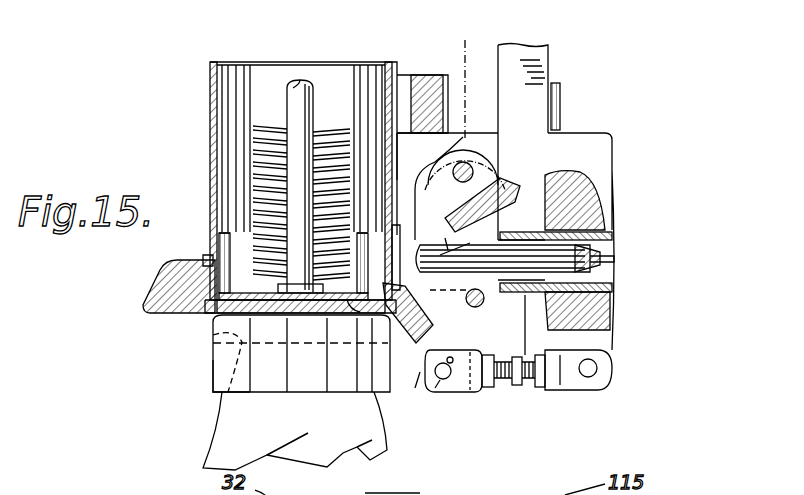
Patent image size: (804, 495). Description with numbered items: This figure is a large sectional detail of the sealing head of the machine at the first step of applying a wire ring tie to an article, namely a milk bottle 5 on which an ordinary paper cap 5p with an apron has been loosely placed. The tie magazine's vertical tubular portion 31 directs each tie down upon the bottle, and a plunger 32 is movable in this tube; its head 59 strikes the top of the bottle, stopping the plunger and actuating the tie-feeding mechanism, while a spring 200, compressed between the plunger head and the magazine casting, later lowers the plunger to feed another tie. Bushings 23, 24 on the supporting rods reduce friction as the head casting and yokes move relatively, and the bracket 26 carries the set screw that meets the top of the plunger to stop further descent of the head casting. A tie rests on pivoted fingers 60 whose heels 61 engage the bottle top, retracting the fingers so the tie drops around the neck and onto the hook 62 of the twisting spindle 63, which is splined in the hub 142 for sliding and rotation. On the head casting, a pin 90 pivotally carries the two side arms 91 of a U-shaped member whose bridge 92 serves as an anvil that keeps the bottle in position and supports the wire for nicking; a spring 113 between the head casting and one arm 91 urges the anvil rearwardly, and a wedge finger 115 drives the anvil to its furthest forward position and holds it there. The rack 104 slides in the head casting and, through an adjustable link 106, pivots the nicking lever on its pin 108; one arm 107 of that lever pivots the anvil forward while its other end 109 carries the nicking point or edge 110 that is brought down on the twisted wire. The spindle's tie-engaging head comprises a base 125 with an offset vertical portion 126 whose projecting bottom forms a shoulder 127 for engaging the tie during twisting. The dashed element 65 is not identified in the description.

The vertical tubular portion 31 is at (212, 158).
The plunger 32 is at (300, 103).
The spring 200 is at (252, 181).
The fingers 60 is at (300, 239).
The bushing 23 is at (147, 300).
The head 59 is at (204, 262).
The milk bottle 5 is at (222, 420).
The paper cap 5p is at (236, 375).
The hidden line 65 is at (222, 336).
The heels 61 is at (358, 312).
The side arms 91 is at (440, 166).
The pin 90 is at (465, 168).
The spring 113 is at (468, 75).
The wedge or finger 115 is at (540, 60).
The bushing 24 is at (562, 92).
The bracket 26 is at (590, 192).
The hub 142 is at (612, 233).
The twisting spindle 63 is at (575, 273).
The lever end 109 is at (498, 196).
The point or edge 110 is at (420, 257).
The hook 62 is at (515, 259).
The vertical portion 126 is at (446, 254).
The bridge or cross portion 92 is at (408, 321).
The base 125 is at (449, 299).
The pin 108 is at (478, 310).
The lever arm 107 is at (522, 322).
The adjustable link 106 is at (555, 378).
The rack 104 is at (605, 384).
The shoulder 127 is at (418, 388).